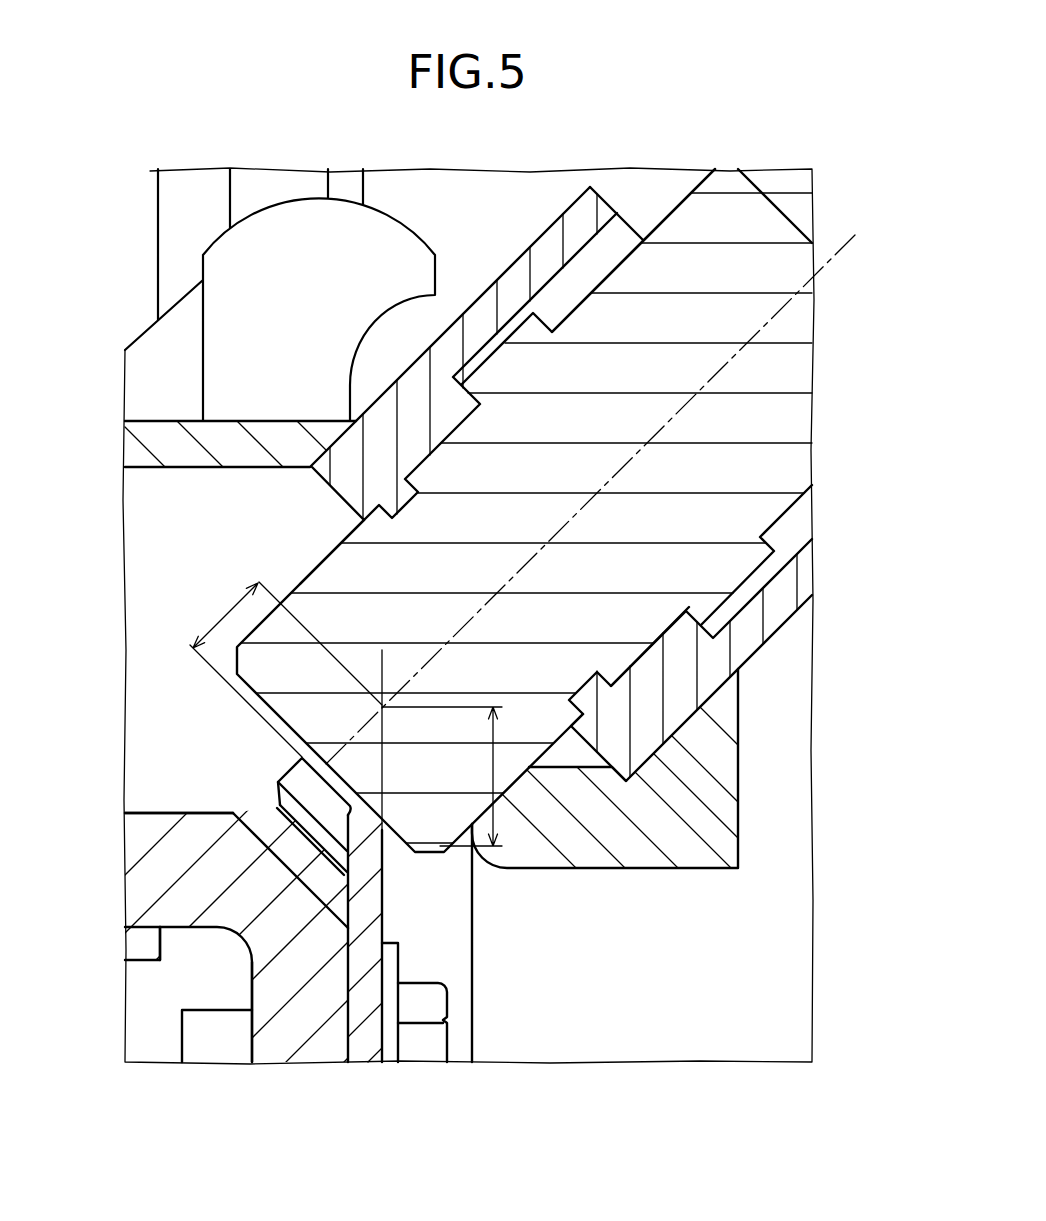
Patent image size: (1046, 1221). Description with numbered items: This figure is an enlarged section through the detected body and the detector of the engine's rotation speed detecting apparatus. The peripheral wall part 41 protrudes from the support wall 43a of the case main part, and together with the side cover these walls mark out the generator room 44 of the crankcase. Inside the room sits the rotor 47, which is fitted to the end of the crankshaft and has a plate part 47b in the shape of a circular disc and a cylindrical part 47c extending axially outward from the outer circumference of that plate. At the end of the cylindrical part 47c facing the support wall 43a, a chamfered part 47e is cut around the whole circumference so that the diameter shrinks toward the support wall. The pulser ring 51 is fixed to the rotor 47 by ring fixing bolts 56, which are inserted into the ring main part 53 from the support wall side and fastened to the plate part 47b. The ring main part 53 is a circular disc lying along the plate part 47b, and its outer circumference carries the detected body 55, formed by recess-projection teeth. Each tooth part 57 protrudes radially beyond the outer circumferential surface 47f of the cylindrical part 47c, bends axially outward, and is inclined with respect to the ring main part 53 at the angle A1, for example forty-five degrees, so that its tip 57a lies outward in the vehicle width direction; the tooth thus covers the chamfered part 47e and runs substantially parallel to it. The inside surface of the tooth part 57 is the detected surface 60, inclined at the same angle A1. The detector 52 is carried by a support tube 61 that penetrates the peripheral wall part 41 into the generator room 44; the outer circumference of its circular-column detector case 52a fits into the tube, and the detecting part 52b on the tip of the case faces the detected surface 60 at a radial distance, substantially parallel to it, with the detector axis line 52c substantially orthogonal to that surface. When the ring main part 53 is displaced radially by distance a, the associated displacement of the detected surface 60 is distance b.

The peripheral wall part 41 is at (191, 420).
The support wall 43a is at (742, 784).
The generator room 44 is at (110, 550).
The rotor 47 is at (254, 1071).
The plate part 47b is at (283, 1050).
The cylindrical part 47c is at (147, 836).
The chamfered part 47e is at (153, 865).
The outer circumferential surface 47f is at (149, 813).
The pulser ring 51 is at (390, 1055).
The detector 52 is at (313, 549).
The detector case 52a is at (345, 537).
The detecting part 52b is at (345, 856).
The detector axis line 52c is at (722, 370).
The ring main part 53 is at (364, 1048).
The detected body 55 is at (318, 800).
The ring fixing bolts 56 is at (170, 1042).
The tooth part 57 is at (316, 806).
The tip 57a is at (318, 790).
The detected surface 60 is at (276, 763).
The support tube 61 is at (500, 270).
The angle A1 is at (292, 762).
The distance a is at (494, 818).
The distance b is at (224, 620).